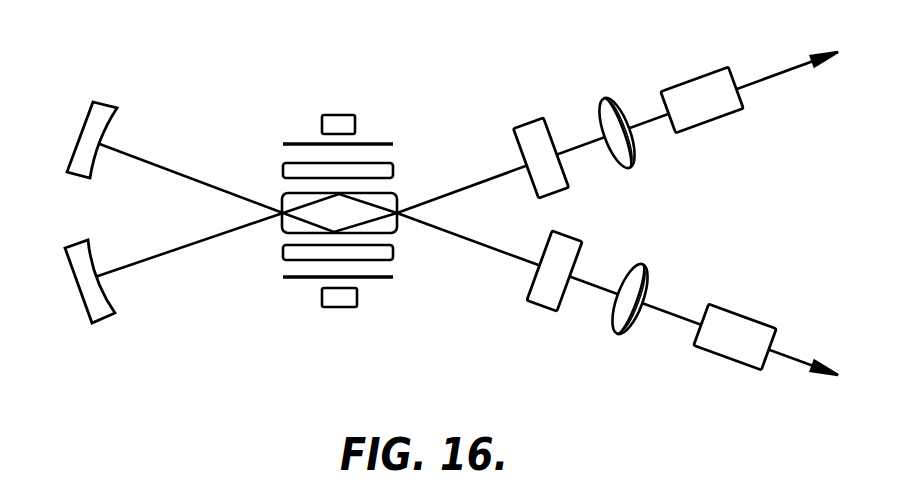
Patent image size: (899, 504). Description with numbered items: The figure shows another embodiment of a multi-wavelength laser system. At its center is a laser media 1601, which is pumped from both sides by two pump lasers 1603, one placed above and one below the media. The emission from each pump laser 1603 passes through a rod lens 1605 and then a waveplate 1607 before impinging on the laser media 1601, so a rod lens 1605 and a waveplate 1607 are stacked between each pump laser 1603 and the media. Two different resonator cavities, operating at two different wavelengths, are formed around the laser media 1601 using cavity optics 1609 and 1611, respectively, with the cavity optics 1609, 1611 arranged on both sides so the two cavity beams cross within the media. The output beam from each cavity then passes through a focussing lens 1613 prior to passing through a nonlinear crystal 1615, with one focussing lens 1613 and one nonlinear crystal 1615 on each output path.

The laser media 1601 is at (316, 233).
The pump laser 1603 is at (333, 114).
The rod lens 1605 is at (383, 143).
The waveplate 1607 is at (393, 168).
The cavity optics 1609 is at (88, 116).
The cavity optics 1611 is at (83, 303).
The focussing lens 1613 is at (612, 95).
The nonlinear crystal 1615 is at (705, 72).